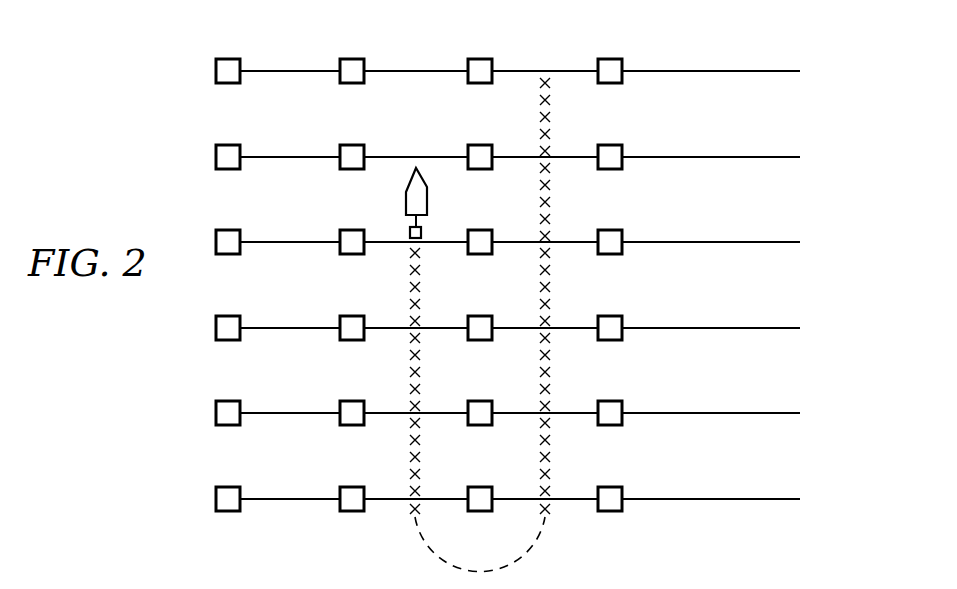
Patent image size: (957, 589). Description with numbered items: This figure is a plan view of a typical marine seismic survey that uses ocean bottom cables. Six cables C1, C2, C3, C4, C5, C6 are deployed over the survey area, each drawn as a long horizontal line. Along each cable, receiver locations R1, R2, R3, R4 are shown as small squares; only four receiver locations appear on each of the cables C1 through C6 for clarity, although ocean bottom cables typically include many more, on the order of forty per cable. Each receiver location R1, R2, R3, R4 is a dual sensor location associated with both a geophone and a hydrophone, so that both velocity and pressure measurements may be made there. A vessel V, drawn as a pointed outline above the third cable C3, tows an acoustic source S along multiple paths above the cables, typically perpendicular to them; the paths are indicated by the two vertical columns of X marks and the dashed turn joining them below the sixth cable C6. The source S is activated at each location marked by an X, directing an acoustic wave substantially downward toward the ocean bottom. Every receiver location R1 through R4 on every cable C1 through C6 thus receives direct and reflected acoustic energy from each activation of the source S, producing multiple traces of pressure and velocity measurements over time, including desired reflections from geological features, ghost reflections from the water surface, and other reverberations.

The receiver location R1 is at (224, 487).
The receiver location R2 is at (348, 487).
The receiver location R3 is at (476, 487).
The receiver location R4 is at (606, 487).
The ocean bottom cable C1 is at (758, 71).
The ocean bottom cable C2 is at (758, 157).
The ocean bottom cable C3 is at (758, 242).
The ocean bottom cable C4 is at (758, 328).
The ocean bottom cable C5 is at (758, 413).
The ocean bottom cable C6 is at (758, 499).
The vessel V is at (405, 193).
The acoustic source S is at (410, 237).